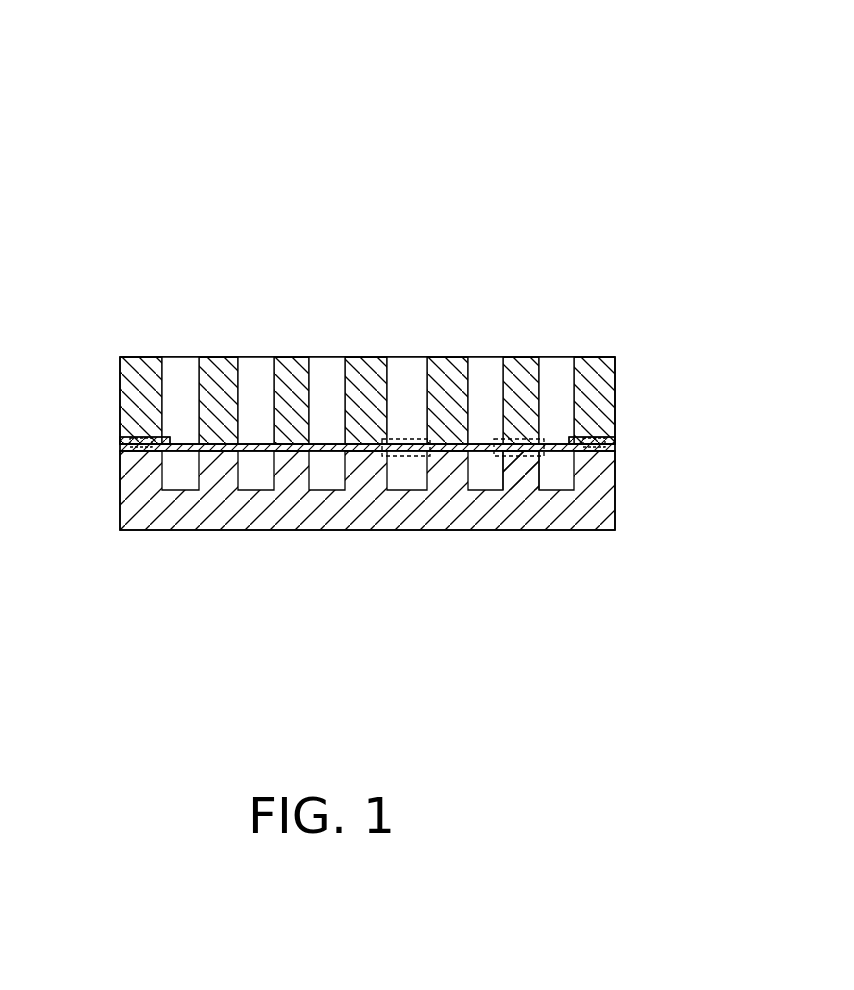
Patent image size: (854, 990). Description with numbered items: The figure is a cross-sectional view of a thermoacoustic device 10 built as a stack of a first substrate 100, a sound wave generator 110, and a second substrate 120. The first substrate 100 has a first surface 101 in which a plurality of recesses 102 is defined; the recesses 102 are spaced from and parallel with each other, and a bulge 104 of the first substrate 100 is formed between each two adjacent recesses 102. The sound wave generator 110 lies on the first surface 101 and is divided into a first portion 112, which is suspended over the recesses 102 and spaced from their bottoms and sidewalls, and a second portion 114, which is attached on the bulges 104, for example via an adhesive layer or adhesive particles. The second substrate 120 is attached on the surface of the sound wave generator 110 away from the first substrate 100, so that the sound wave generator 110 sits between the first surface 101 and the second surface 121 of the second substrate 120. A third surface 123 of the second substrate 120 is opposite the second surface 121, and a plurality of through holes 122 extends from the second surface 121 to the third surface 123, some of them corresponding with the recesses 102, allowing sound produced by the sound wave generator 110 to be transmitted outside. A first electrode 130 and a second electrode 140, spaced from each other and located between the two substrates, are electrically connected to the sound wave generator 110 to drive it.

The thermoacoustic device 10 is at (330, 99).
The first substrate 100 is at (592, 508).
The first surface 101 is at (141, 453).
The recesses 102 is at (565, 473).
The bulge 104 is at (522, 463).
The sound wave generator 110 is at (437, 357).
The first portion 112 is at (405, 438).
The second portion 114 is at (520, 438).
The second substrate 120 is at (603, 400).
The second surface 121 is at (147, 436).
The through holes 122 is at (552, 368).
The third surface 123 is at (145, 355).
The first electrode 130 is at (128, 446).
The second electrode 140 is at (610, 447).